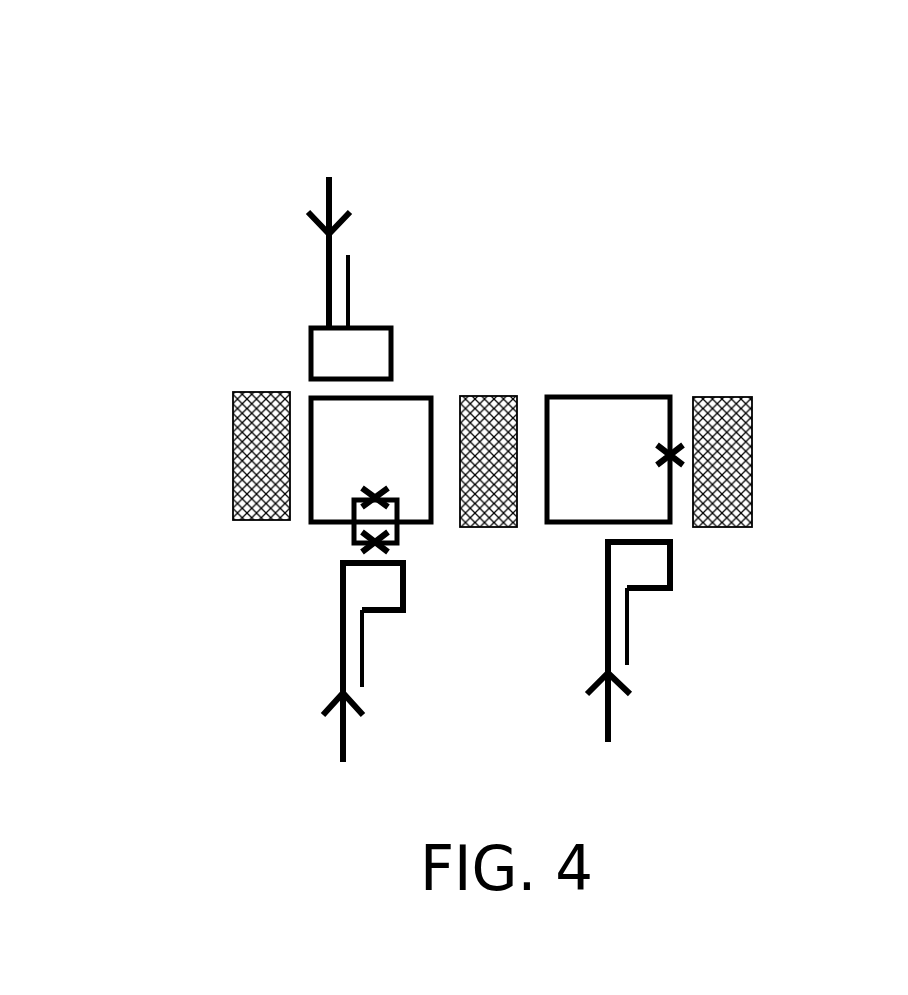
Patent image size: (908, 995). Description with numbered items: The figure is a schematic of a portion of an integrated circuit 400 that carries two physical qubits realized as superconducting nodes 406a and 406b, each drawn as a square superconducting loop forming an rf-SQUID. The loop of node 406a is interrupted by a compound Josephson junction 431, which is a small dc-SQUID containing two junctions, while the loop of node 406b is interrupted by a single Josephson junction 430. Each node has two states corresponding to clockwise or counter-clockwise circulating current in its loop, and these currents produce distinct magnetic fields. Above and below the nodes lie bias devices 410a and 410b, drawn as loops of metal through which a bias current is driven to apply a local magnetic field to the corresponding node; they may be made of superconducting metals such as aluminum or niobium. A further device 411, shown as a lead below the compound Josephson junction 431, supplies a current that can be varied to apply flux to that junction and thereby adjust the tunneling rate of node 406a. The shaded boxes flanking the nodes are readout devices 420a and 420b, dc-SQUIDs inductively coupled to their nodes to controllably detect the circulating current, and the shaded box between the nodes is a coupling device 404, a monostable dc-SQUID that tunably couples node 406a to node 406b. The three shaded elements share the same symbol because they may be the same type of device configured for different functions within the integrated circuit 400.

The integrated circuit 400 is at (470, 124).
The bias device 410a is at (317, 327).
The bias device 410b is at (672, 547).
The superconducting node 406a is at (330, 490).
The superconducting node 406b is at (637, 437).
The compound Josephson junction 431 is at (391, 492).
The Josephson junction 430 is at (678, 447).
The readout device 420a is at (260, 520).
The readout device 420b is at (718, 397).
The coupling device 404 is at (498, 527).
The device 411 is at (367, 657).